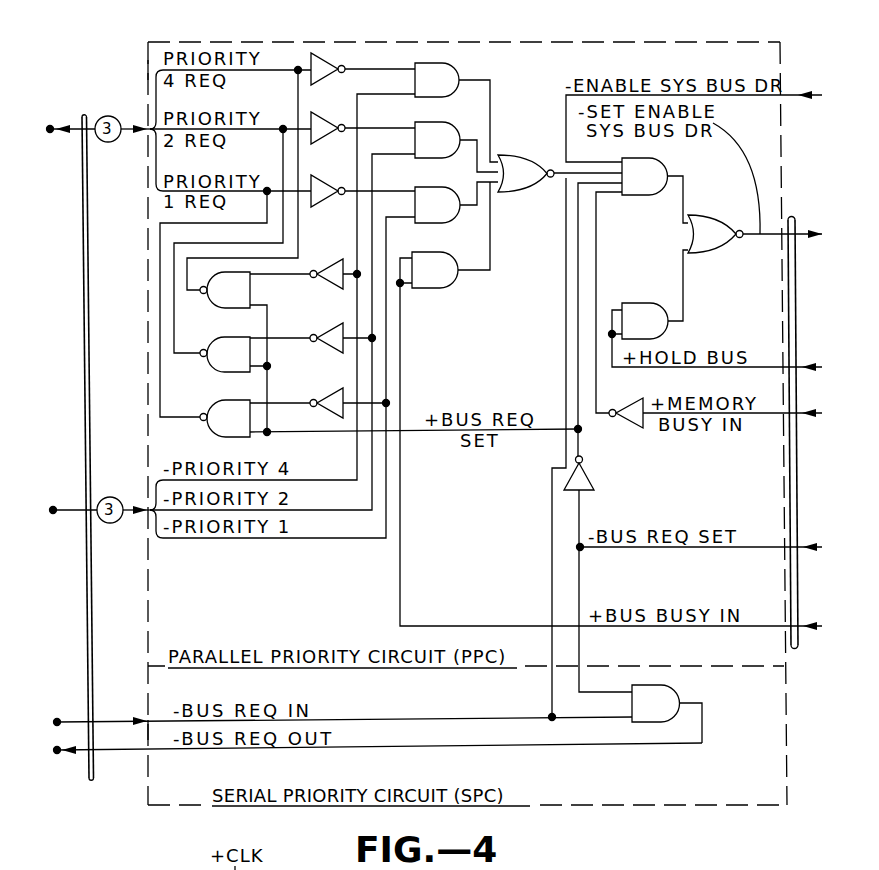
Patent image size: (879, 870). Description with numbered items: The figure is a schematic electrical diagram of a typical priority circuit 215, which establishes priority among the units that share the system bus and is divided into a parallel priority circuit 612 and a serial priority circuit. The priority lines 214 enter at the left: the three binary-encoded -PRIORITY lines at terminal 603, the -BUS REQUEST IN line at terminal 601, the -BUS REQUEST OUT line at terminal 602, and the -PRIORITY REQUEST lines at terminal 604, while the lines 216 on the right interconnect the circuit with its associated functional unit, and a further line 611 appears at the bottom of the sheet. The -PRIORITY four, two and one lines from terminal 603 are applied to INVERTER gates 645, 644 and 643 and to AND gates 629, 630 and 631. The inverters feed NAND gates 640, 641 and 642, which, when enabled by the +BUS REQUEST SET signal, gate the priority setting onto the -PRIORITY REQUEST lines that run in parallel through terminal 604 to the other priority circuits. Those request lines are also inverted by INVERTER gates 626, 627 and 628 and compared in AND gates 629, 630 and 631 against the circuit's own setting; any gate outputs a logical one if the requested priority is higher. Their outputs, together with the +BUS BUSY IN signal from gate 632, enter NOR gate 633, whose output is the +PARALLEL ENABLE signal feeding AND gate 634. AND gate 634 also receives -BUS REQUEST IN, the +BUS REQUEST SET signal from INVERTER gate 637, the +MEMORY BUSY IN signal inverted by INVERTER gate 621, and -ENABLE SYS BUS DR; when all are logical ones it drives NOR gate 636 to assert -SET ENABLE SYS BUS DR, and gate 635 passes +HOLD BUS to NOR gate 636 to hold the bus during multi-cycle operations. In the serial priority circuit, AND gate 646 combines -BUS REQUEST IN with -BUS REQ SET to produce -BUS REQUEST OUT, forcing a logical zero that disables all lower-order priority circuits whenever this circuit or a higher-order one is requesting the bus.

The terminal point 604 is at (50, 125).
The terminal point 603 is at (78, 490).
The terminal point 601 is at (80, 704).
The terminal point 602 is at (57, 750).
The priority lines 214 is at (93, 780).
The lines 216 is at (790, 648).
The parallel priority circuit 612 is at (148, 636).
The priority circuit 215 is at (212, 808).
The clock line 611 is at (688, 869).
The INVERTER gate 626 is at (325, 76).
The INVERTER gate 627 is at (325, 135).
The INVERTER gate 628 is at (325, 198).
The AND gate 629 is at (455, 92).
The AND gate 630 is at (455, 152).
The AND gate 631 is at (455, 218).
The gate 632 is at (417, 279).
The NOR gate 633 is at (509, 182).
The AND gate 634 is at (628, 186).
The gate 635 is at (628, 330).
The NOR gate 636 is at (699, 243).
The INVERTER gate 637 is at (592, 478).
The INVERTER gate 621 is at (638, 425).
The NAND gate 640 is at (238, 306).
The NAND gate 641 is at (236, 368).
The NAND gate 642 is at (222, 432).
The INVERTER gate 643 is at (340, 286).
The INVERTER gate 644 is at (340, 352).
The INVERTER gate 645 is at (336, 410).
The AND gate 646 is at (639, 713).